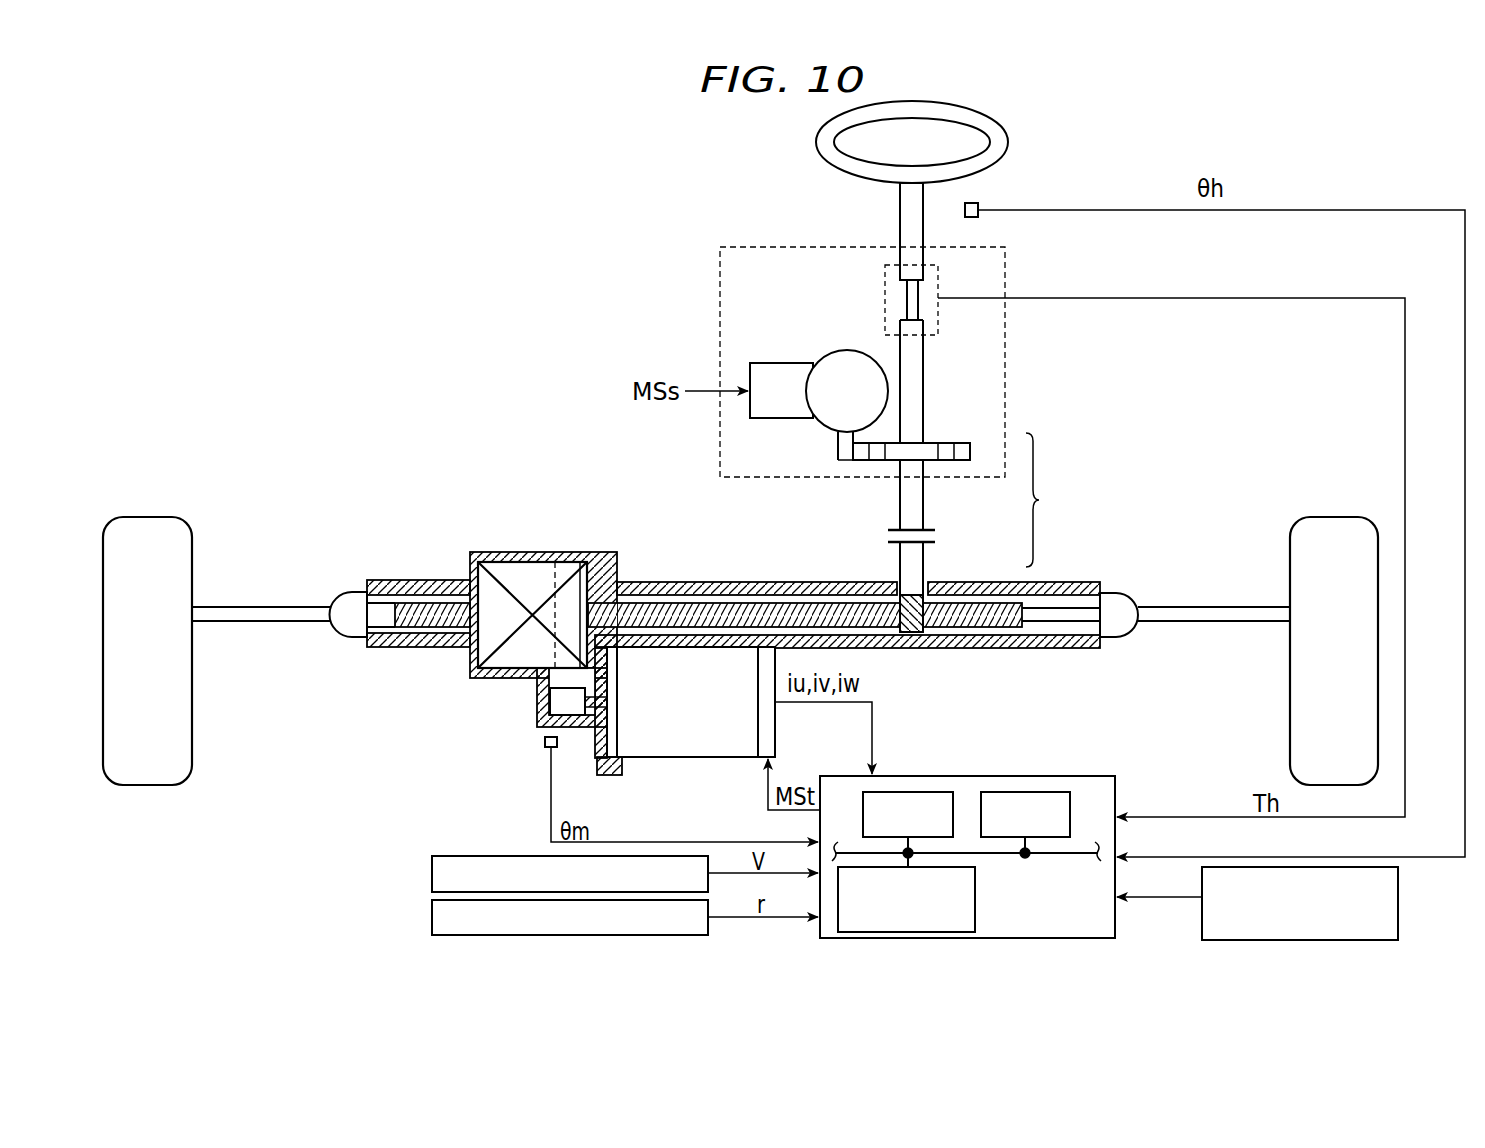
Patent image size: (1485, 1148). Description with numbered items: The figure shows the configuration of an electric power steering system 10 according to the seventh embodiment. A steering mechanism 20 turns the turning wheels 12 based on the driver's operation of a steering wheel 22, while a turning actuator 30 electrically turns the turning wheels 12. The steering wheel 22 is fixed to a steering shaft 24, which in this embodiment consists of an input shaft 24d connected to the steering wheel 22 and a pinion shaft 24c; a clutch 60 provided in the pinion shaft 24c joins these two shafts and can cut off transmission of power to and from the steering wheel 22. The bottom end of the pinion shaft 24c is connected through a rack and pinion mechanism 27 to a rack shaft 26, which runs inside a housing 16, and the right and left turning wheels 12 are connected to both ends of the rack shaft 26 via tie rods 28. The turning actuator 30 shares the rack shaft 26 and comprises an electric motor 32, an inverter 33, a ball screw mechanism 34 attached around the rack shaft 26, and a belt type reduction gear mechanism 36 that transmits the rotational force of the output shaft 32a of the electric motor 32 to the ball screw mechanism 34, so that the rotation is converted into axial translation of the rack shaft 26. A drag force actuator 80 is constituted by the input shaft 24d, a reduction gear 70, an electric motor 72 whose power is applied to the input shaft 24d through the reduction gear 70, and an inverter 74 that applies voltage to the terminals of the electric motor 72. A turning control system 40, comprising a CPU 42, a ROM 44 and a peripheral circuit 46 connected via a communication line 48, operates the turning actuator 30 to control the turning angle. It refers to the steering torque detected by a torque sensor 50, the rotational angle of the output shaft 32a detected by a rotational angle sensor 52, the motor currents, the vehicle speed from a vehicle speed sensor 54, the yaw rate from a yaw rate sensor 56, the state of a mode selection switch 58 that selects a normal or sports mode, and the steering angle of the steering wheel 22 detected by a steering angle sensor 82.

The electric power steering system 10 is at (1292, 173).
The turning wheels 12 is at (146, 518).
The rack housing 16 is at (1010, 648).
The steering mechanism 20 is at (611, 286).
The steering wheel 22 is at (1008, 136).
The steering shaft 24 is at (986, 375).
The pinion shaft 24c is at (900, 567).
The input shaft 24d is at (925, 358).
The rack shaft 26 is at (1056, 627).
The rack and pinion mechanism 27 is at (934, 660).
The tie rods 28 is at (245, 622).
The turning actuator 30 is at (476, 500).
The electric motor 32 is at (655, 757).
The output shaft 32a is at (575, 718).
The inverter 33 is at (777, 737).
The ball screw mechanism 34 is at (488, 630).
The belt type reduction gear mechanism 36 is at (524, 698).
The turning control system 40 is at (1090, 776).
The CPU 42 is at (907, 792).
The ROM 44 is at (1027, 792).
The peripheral circuit 46 is at (975, 898).
The communication line 48 is at (1072, 858).
The torque sensor 50 is at (940, 292).
The rotational angle sensor 52 is at (545, 741).
The vehicle speed sensor 54 is at (431, 875).
The yaw rate sensor 56 is at (431, 919).
The mode selection switch 58 is at (1400, 888).
The clutch 60 is at (935, 528).
The reduction gear 70 is at (958, 443).
The electric motor 72 is at (839, 352).
The inverter 74 is at (786, 363).
The drag force actuator 80 is at (780, 247).
The steering angle sensor 82 is at (980, 200).